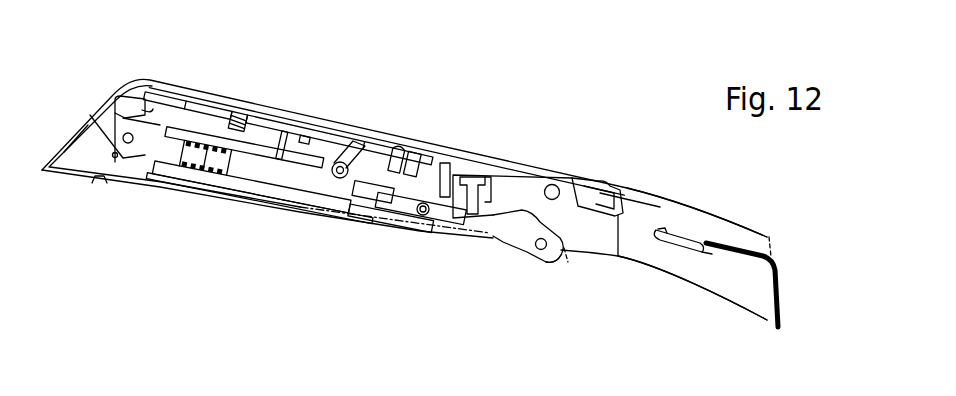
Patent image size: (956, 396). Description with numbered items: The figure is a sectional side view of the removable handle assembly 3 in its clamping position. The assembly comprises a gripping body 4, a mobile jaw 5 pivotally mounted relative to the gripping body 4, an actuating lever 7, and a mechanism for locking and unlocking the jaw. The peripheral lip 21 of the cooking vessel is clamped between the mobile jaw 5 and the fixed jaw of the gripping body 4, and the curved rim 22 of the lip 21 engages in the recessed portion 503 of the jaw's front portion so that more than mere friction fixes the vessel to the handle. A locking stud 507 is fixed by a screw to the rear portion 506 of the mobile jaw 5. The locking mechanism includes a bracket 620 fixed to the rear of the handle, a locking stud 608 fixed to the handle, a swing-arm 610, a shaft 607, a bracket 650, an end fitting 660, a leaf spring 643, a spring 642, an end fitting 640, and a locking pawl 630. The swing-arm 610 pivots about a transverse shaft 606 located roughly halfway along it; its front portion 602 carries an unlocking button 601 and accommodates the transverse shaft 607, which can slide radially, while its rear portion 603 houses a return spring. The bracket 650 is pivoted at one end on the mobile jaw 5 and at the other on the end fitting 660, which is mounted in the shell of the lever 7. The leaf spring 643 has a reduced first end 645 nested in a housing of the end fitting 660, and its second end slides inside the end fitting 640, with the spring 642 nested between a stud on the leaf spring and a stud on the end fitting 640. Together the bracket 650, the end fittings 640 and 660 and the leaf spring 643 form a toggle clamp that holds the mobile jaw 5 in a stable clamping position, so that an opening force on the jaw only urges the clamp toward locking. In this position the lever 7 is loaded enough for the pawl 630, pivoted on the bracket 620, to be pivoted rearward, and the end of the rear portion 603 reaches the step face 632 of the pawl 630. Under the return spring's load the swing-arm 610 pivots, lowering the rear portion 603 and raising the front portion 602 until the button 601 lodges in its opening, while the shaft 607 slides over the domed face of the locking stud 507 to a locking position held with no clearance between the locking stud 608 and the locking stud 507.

The removable handle assembly 3 is at (660, 112).
The gripping body 4 is at (774, 240).
The mobile jaw 5 is at (624, 262).
The actuating lever 7 is at (549, 274).
The peripheral lip 21 is at (770, 258).
The curved rim 22 is at (700, 250).
The recessed portion 503 is at (673, 240).
The rear portion 506 is at (540, 188).
The locking stud 507 is at (447, 190).
The unlocking button 601 is at (595, 185).
The front portion 602 is at (477, 172).
The rear portion 603 is at (255, 135).
The shaft 606 is at (338, 162).
The shaft 607 is at (428, 220).
The locking stud 608 is at (421, 165).
The swing-arm 610 is at (217, 112).
The bracket 620 is at (102, 153).
The locking pawl 630 is at (120, 112).
The step face 632 is at (142, 110).
The end fitting 640 is at (270, 200).
The spring 642 is at (197, 163).
The leaf spring 643 is at (330, 200).
The first end 645 is at (383, 217).
The bracket 650 is at (510, 227).
The end fitting 660 is at (370, 188).